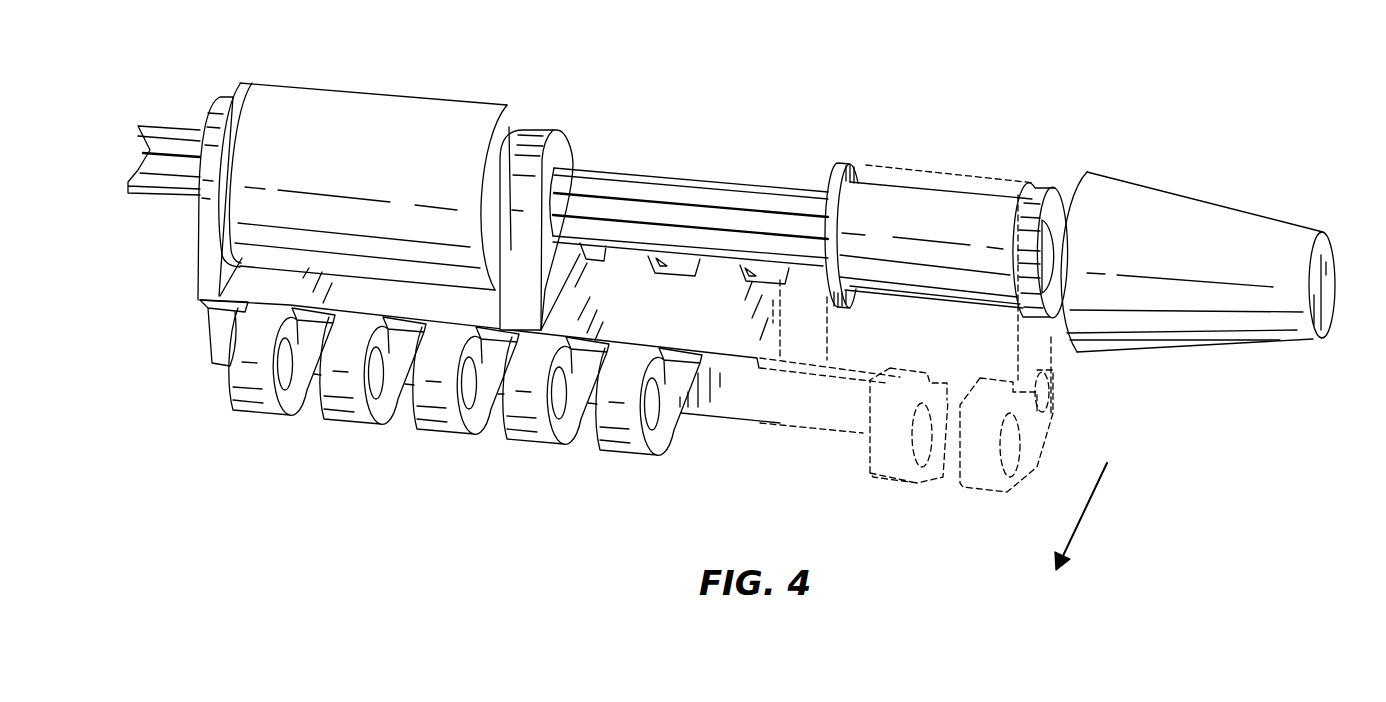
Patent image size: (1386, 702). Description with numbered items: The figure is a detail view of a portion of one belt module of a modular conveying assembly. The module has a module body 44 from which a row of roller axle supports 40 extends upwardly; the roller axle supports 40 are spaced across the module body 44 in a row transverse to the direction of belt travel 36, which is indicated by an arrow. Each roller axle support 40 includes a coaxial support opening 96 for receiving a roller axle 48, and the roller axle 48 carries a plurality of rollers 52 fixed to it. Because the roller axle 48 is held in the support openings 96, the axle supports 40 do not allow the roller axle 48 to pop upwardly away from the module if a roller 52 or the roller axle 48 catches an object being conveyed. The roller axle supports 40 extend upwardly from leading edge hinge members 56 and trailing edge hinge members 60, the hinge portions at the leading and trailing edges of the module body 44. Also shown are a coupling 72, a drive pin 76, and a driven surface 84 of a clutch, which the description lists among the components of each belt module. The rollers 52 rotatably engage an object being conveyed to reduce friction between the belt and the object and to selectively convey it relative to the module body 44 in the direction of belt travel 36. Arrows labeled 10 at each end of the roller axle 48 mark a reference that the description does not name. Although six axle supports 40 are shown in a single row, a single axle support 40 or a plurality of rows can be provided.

The axis of rotation / direction arrow 10 is at (122, 158).
The direction of belt travel 36 is at (1073, 537).
The roller axle supports 40 is at (228, 100).
The module body 44 is at (698, 313).
The roller axle 48 is at (735, 200).
The rollers 52 is at (362, 105).
The leading edge hinge members 56 is at (641, 247).
The trailing edge hinge members 60 is at (348, 405).
The coupling 72 is at (935, 205).
The drive pin 76 is at (1035, 190).
The driven surface 84 is at (1197, 222).
The coaxial support opening 96 is at (565, 178).